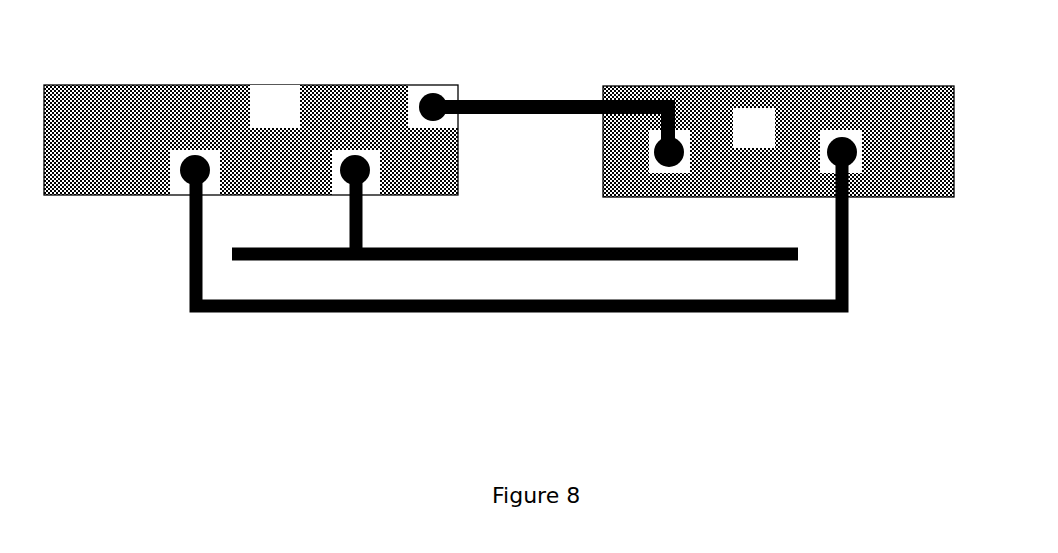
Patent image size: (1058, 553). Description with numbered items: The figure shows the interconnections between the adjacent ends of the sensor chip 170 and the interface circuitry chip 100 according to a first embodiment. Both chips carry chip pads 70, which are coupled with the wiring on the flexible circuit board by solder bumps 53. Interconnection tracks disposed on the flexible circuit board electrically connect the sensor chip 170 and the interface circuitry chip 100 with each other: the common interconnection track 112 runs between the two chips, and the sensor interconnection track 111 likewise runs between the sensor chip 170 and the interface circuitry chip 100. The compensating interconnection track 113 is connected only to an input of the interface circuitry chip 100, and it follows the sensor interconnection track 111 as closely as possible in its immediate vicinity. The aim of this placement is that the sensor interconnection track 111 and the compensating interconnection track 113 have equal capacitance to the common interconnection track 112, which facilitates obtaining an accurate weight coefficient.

The interface circuitry chip 100 is at (145, 95).
The sensor chip 170 is at (810, 103).
The chip pads 70 is at (270, 100).
The solder bumps 53 is at (437, 93).
The common interconnection track 112 is at (503, 100).
The compensating interconnection track 113 is at (500, 248).
The sensor interconnection track 111 is at (728, 298).